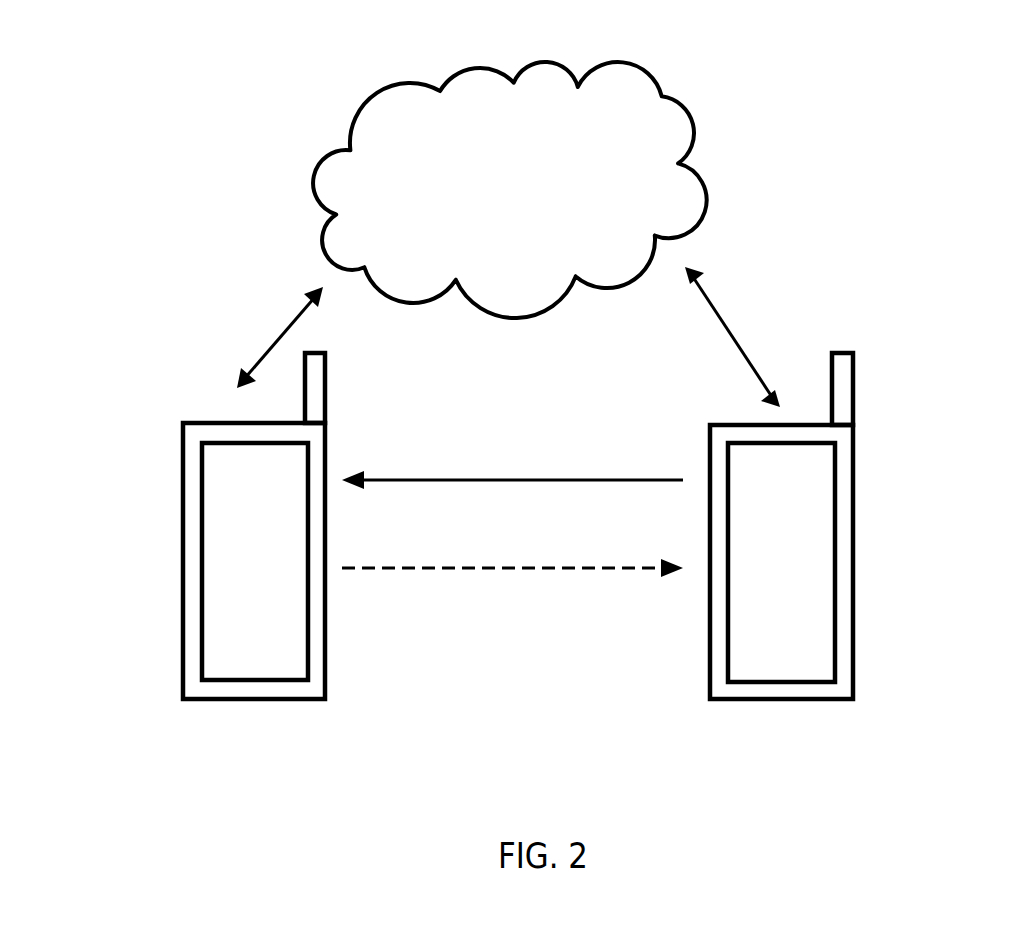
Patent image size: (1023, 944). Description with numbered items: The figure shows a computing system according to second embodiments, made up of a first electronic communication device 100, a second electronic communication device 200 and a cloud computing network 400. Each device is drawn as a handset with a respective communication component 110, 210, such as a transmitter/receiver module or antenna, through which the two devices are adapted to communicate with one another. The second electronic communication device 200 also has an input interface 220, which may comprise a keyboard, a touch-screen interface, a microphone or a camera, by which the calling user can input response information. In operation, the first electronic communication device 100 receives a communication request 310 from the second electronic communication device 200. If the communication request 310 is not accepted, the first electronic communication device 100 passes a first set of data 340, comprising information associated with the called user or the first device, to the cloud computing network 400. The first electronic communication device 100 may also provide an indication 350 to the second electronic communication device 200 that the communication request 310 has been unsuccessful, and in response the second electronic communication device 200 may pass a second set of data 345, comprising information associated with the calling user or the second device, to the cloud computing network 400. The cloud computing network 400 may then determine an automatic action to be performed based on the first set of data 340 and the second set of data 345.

The first electronic communication device 100 is at (253, 700).
The communication component 110 is at (325, 383).
The second electronic communication device 200 is at (798, 700).
The communication component 210 is at (853, 393).
The input interface 220 is at (835, 528).
The communication request 310 is at (428, 480).
The first set of data 340 is at (277, 337).
The second set of data 345 is at (723, 317).
The indication 350 is at (473, 550).
The cloud computing network 400 is at (509, 190).